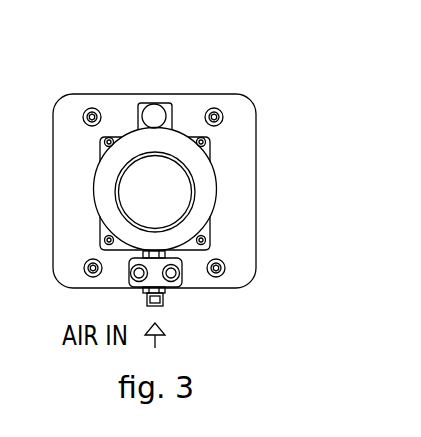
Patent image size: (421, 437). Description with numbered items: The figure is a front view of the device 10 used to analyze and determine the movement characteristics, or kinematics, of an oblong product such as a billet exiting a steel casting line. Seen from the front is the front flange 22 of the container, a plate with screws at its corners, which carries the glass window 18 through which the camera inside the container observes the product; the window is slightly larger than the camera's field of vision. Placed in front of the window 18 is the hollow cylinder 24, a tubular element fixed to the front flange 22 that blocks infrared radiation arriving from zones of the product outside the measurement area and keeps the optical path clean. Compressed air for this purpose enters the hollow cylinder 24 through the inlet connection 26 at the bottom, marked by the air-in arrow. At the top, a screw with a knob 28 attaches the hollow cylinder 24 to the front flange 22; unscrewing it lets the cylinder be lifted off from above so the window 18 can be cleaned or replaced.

The device 10 is at (126, 60).
The glass window 18 is at (170, 193).
The front flange 22 is at (233, 232).
The hollow cylinder 24 is at (222, 166).
The inlet connection 26 is at (163, 300).
The screw with a knob 28 is at (153, 108).